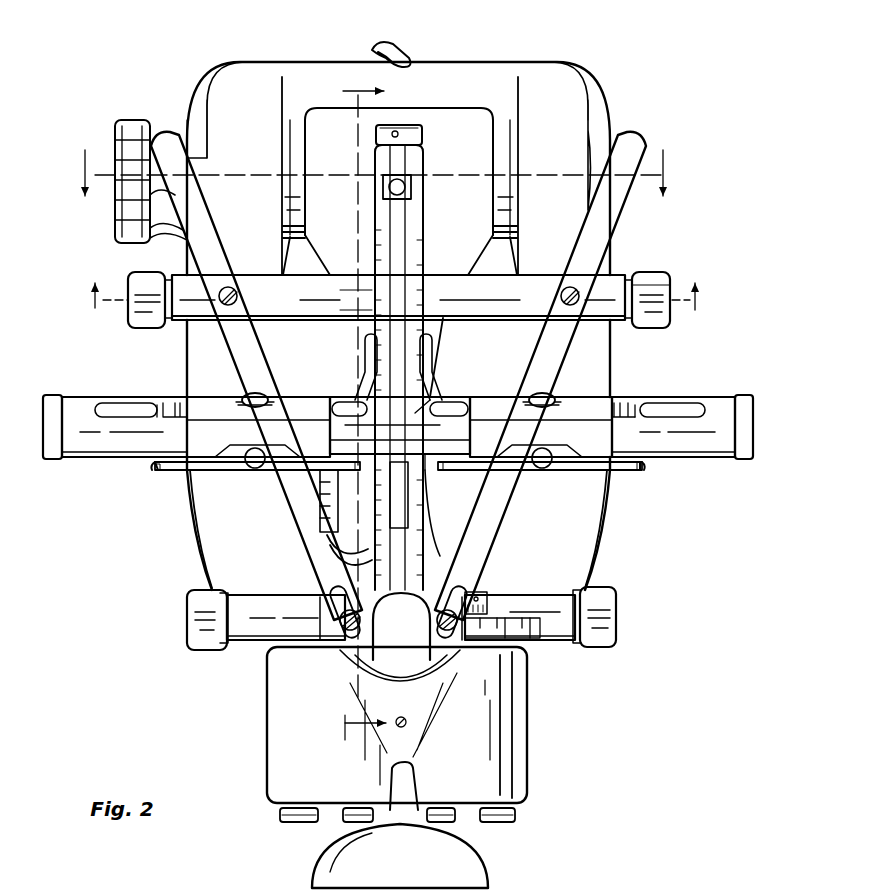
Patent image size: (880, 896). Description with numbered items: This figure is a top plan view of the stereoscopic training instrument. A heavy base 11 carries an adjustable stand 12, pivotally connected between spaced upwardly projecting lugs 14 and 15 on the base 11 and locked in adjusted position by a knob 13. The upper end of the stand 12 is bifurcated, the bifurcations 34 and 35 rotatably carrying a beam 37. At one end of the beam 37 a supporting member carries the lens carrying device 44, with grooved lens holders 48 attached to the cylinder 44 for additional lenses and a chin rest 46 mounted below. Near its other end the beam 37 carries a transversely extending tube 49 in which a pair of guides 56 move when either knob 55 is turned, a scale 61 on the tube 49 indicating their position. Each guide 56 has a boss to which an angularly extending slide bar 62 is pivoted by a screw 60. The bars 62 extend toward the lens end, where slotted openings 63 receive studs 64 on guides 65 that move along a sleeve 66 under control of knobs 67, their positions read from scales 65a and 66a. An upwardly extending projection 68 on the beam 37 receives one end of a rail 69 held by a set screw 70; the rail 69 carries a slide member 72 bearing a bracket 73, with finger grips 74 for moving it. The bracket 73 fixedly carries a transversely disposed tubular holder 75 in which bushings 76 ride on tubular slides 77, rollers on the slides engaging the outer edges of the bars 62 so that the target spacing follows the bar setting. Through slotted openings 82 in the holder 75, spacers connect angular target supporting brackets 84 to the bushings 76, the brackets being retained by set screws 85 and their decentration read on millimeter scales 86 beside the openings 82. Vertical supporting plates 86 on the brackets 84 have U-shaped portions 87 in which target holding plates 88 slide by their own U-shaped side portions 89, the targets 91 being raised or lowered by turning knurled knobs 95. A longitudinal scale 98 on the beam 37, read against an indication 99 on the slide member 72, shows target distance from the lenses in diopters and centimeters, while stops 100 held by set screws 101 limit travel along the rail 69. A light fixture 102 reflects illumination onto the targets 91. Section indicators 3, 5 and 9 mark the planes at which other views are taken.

The section line 3- 3 is at (366, 406).
The section line 5- 5 is at (395, 313).
The section line 9- 9 is at (374, 161).
The heavy base 11 is at (600, 522).
The adjustable stand 12 is at (460, 114).
The knob 13 is at (118, 222).
The lug 14 is at (222, 118).
The lug 15 is at (578, 118).
The bifurcation 34 is at (360, 538).
The bifurcation 35 is at (433, 528).
The beam 37 is at (422, 134).
The lens carrying device 44 is at (529, 717).
The chin rest 46 is at (478, 880).
The grooved lens holder 48 is at (280, 816).
The transversely extending tube 49 is at (320, 322).
The knob 55 is at (146, 328).
The guide 56 is at (251, 283).
The screw 60 is at (230, 306).
The scale 61 is at (620, 290).
The slide bar 62 is at (207, 240).
The slotted opening 63 is at (342, 590).
The stud 64 is at (340, 620).
The guide 65 is at (330, 597).
The scale 65a is at (505, 612).
The sleeve 66 is at (565, 600).
The scale 66a is at (540, 598).
The knob 67 is at (188, 630).
The upwardly extending projection 68 is at (394, 125).
The rail 69 is at (397, 218).
The set screw 70 is at (391, 134).
The slide member 72 is at (408, 490).
The bracket 73 is at (404, 443).
The finger grip 74 is at (357, 348).
The tubular holder 75 is at (433, 405).
The bushing 76 is at (180, 403).
The tubular slide 77 is at (152, 410).
The slotted opening 82 is at (106, 405).
The target supporting bracket 84 is at (222, 405).
The set screw 85 is at (255, 392).
The vertical supporting plate 86 is at (160, 405).
The U-shaped portion 87 is at (165, 472).
The target holding plate 88 is at (200, 458).
The U-shaped side portion 89 is at (154, 469).
The target 91 is at (222, 472).
The knurled knob 95 is at (259, 450).
The longitudinal scale 98 is at (380, 308).
The indication 99 is at (330, 490).
The stop 100 is at (410, 181).
The set screw 101 is at (402, 188).
The light fixture 102 is at (372, 652).